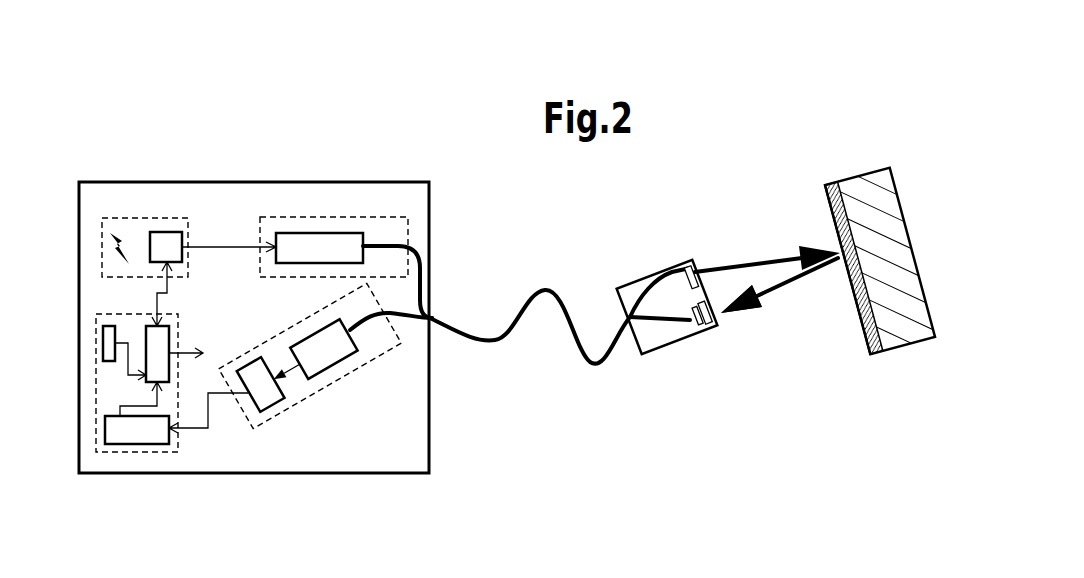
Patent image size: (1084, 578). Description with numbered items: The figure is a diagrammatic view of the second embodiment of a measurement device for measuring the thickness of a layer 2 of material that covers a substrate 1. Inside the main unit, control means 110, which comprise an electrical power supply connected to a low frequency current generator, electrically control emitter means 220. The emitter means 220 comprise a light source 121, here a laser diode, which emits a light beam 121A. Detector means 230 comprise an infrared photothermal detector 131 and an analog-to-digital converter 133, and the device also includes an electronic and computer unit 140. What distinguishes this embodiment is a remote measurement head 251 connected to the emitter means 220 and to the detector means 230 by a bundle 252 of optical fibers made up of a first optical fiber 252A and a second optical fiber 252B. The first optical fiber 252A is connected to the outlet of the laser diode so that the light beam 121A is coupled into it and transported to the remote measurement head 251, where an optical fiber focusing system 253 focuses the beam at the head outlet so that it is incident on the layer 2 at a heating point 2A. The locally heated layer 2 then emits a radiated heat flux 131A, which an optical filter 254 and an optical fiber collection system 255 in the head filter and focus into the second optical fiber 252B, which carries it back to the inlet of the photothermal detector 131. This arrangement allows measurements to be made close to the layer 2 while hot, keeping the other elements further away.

The substrate 1 is at (853, 172).
The layer of material 2 is at (829, 184).
The heating point 2A is at (836, 233).
The control means 110 is at (132, 208).
The light source 121 is at (300, 233).
The light beam 121A is at (733, 264).
The infrared photothermal detector 131 is at (333, 367).
The radiated heat flux 131A is at (773, 288).
The analog-to-digital converter 133 is at (246, 368).
The electronic and computer unit 140 is at (143, 466).
The emitter means 220 is at (335, 206).
The detector means 230 is at (295, 418).
The remote measurement head 251 is at (668, 351).
The bundle of optical fibers 252 is at (522, 312).
The first optical fiber 252A is at (390, 245).
The second optical fiber 252B is at (370, 323).
The optical fiber focusing system 253 is at (668, 267).
The optical filter 254 is at (714, 332).
The optical fiber collection system 255 is at (683, 318).